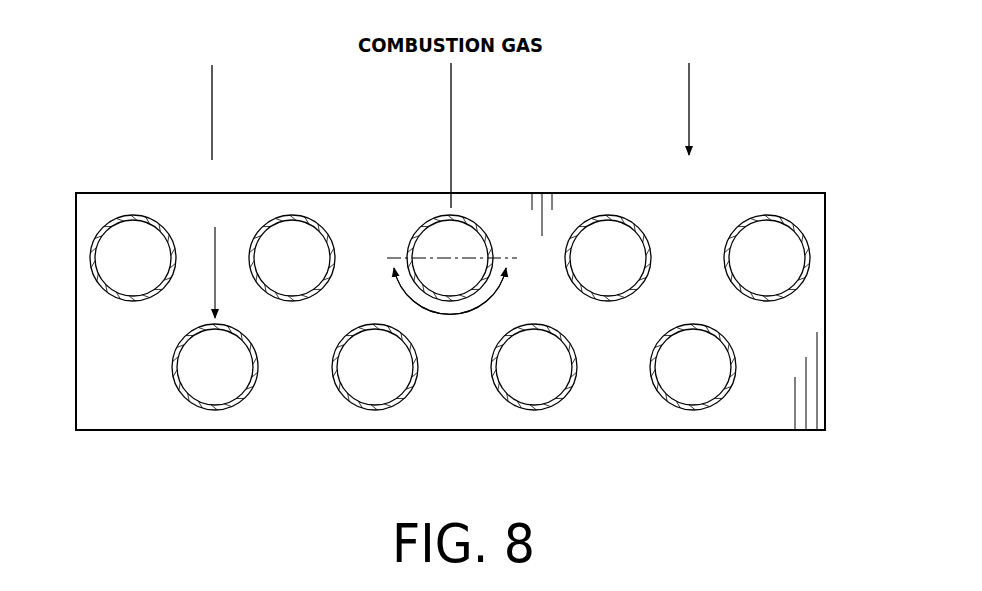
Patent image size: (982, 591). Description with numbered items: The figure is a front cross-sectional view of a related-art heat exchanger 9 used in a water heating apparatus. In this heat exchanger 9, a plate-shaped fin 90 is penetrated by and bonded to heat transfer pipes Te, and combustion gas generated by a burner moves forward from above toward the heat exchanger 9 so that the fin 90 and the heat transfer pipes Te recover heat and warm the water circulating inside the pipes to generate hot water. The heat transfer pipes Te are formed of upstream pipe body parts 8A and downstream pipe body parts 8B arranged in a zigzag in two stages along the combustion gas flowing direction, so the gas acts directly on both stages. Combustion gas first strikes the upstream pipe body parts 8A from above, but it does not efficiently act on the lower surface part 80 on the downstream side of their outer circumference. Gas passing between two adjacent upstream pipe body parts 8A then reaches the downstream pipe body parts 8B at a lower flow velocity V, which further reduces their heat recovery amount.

The heat exchanger 9 is at (135, 95).
The fin 90 is at (183, 205).
The upstream pipe body part 8A is at (440, 229).
The downstream pipe body part 8B is at (230, 408).
The lower surface part 80 is at (452, 300).
The heat transfer pipe Te is at (123, 212).
The flow velocity V is at (225, 272).